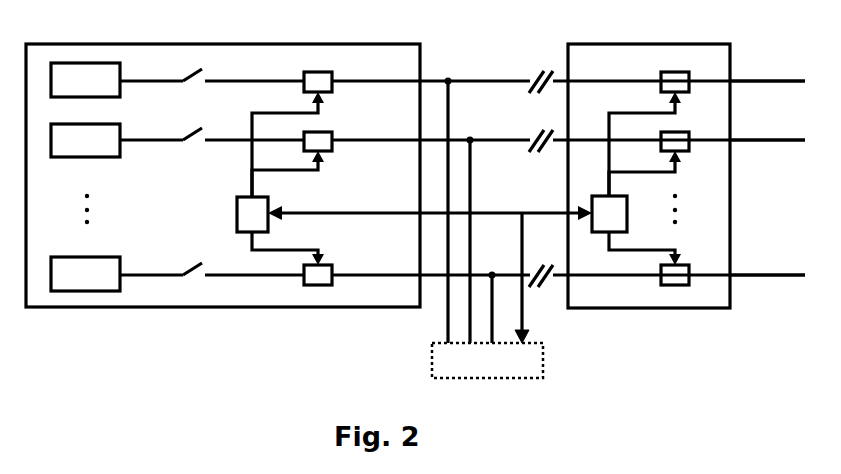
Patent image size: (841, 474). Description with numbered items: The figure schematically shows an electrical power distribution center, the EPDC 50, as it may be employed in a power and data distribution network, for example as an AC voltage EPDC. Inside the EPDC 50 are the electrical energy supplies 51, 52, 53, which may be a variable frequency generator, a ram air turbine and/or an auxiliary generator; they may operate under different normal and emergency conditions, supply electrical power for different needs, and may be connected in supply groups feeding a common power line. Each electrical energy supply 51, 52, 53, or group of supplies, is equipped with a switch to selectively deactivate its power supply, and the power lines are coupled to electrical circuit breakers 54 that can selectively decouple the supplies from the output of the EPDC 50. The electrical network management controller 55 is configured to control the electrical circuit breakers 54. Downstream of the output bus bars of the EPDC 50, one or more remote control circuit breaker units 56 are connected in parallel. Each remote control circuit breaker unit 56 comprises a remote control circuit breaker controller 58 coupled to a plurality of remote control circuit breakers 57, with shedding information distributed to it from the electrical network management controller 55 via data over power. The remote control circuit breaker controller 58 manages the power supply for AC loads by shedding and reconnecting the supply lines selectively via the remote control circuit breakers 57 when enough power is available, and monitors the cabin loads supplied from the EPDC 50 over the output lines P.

The EPDC 50 is at (104, 308).
The electrical energy supply 51 is at (138, 154).
The electrical energy supply 52 is at (138, 154).
The electrical energy supply 53 is at (82, 63).
The electrical circuit breaker 54 is at (318, 72).
The electrical network management controller 55 is at (237, 222).
The remote control circuit breaker unit 56 is at (588, 308).
The remote control circuit breaker 57 is at (675, 72).
The remote control circuit breaker controller 58 is at (627, 215).
The output line P is at (768, 79).